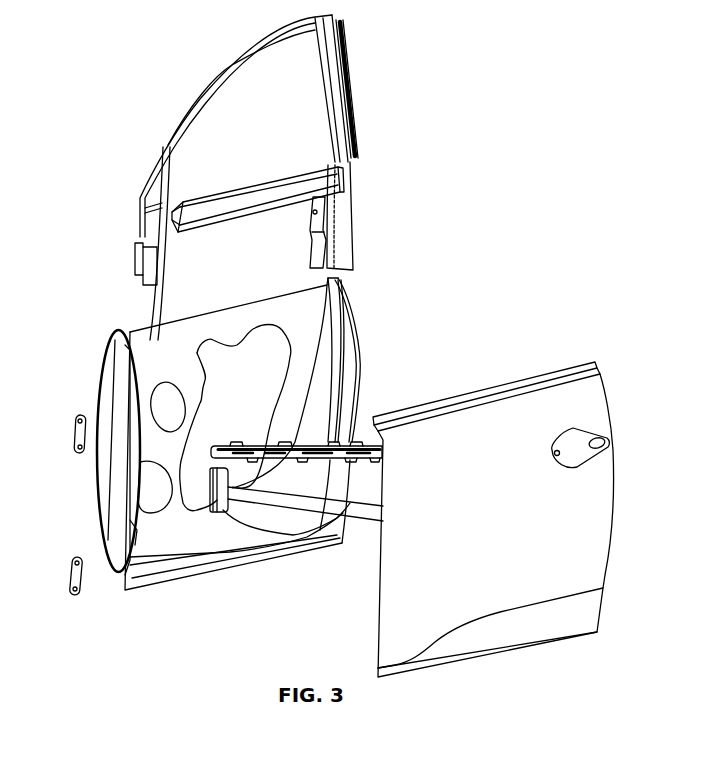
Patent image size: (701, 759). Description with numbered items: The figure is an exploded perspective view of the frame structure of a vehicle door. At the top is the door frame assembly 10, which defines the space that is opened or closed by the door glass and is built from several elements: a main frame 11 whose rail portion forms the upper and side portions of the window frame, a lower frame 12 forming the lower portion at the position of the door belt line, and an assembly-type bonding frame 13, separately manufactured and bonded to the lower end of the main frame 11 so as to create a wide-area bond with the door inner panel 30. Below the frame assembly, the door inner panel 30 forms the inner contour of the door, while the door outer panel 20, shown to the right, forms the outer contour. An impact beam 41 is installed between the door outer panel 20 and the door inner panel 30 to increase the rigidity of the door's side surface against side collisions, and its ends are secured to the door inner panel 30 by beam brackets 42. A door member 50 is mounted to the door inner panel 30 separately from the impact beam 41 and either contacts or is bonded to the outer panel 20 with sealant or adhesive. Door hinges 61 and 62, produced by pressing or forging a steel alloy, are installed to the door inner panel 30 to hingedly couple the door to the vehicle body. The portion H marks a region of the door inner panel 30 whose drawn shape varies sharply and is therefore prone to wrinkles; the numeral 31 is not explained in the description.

The door frame assembly 10 is at (276, 177).
The main frame 11 is at (200, 103).
The lower frame 12 is at (256, 198).
The assembly-type bonding frame 13 is at (337, 218).
The door outer panel 20 is at (560, 393).
The door inner panel 30 is at (274, 430).
The embossed portion 31 is at (215, 345).
The impact beam 41 is at (300, 503).
The beam bracket 42 is at (223, 510).
The door member 50 is at (348, 443).
The door hinge 61 is at (78, 433).
The door hinge 62 is at (72, 577).
The portion H is at (110, 360).